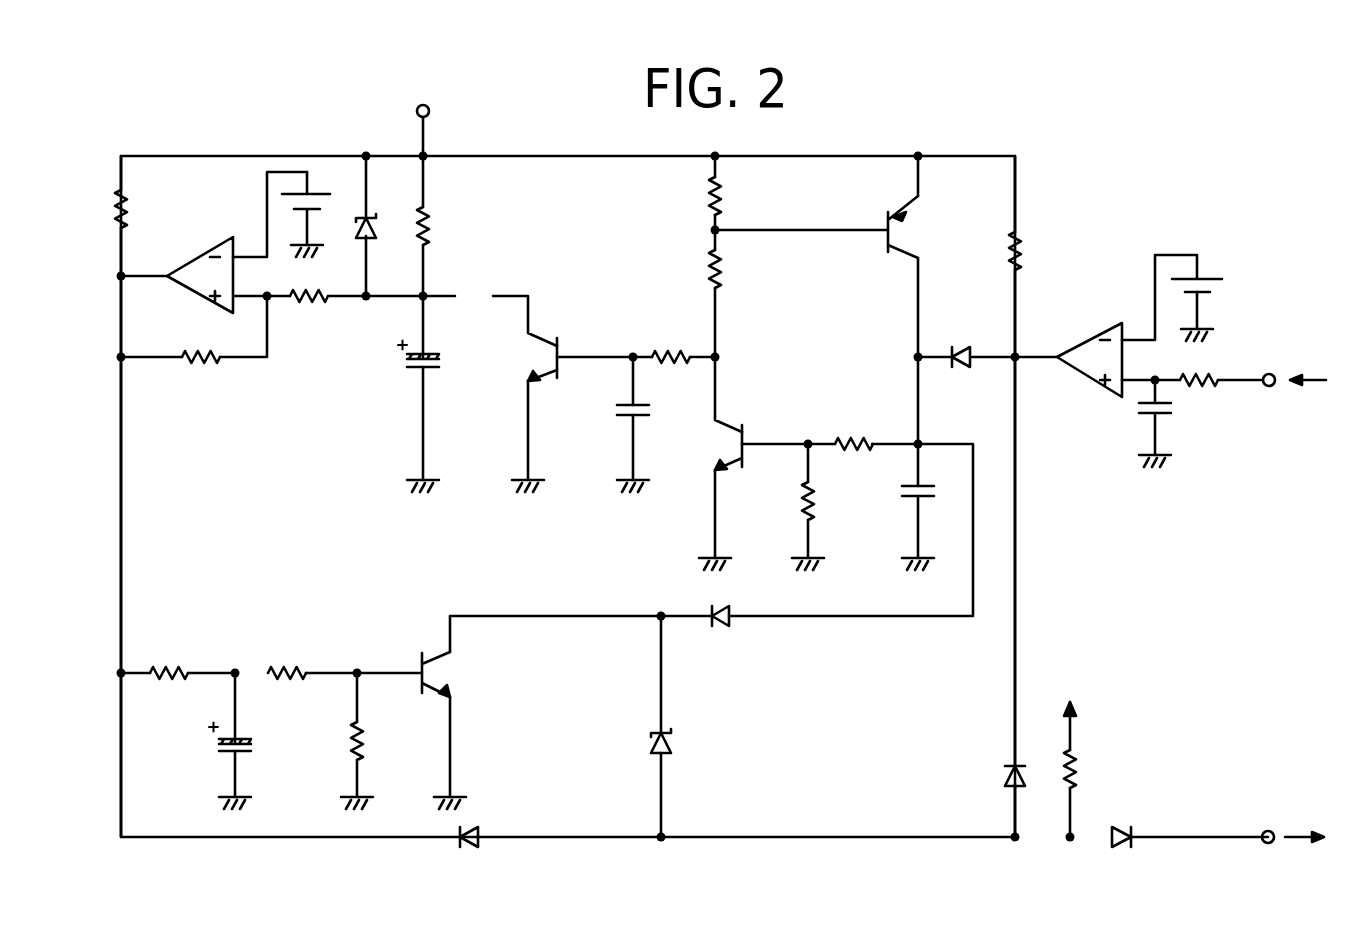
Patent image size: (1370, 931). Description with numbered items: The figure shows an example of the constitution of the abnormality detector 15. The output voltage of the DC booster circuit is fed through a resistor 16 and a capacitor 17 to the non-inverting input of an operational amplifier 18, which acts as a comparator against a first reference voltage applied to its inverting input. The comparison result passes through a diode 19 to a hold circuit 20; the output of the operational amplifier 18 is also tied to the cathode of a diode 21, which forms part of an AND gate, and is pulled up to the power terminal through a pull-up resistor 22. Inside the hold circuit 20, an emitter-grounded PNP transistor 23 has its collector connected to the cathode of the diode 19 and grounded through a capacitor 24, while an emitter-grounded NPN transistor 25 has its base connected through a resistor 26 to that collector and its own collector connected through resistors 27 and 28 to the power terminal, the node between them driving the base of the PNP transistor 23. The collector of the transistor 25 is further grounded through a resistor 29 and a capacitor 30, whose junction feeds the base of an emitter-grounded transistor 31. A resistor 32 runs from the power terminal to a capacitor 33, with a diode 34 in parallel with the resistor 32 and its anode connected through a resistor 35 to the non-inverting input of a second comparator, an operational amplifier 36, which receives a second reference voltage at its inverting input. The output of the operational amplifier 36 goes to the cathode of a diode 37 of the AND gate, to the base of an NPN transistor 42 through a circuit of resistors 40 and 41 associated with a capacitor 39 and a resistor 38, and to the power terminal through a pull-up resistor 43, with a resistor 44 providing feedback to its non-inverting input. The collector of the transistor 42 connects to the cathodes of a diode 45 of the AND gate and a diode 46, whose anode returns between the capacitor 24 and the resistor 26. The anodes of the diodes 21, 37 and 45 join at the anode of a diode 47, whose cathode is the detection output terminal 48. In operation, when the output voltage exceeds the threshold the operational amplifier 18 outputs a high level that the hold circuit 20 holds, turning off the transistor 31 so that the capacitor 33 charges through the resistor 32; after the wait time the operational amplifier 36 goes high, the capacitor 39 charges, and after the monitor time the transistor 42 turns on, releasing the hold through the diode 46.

The abnormality detector 15 is at (708, 463).
The resistor 16 is at (1216, 378).
The capacitor 17 is at (1166, 414).
The operational amplifier 18 is at (1098, 387).
The diode 19 is at (960, 347).
The hold circuit 20 is at (920, 200).
The diode 21 is at (1003, 776).
The pull-up resistor 22 is at (1025, 243).
The PNP transistor 23 is at (882, 248).
The capacitor 24 is at (906, 498).
The NPN transistor 25 is at (745, 428).
The resistor 26 is at (858, 440).
The resistor 27 is at (704, 272).
The resistor 28 is at (704, 207).
The resistor 29 is at (670, 354).
The capacitor 30 is at (622, 414).
The transistor 31 is at (560, 342).
The resistor 32 is at (430, 228).
The capacitor 33 is at (407, 372).
The diode 34 is at (371, 222).
The resistor 35 is at (312, 304).
The operational amplifier 36 is at (207, 252).
The diode 37 is at (480, 830).
The resistor 38 is at (178, 670).
The capacitor 39 is at (244, 742).
The resistor 40 is at (290, 670).
The resistor 41 is at (352, 746).
The NPN transistor 42 is at (418, 663).
The pull-up resistor 43 is at (113, 221).
The resistor 44 is at (205, 365).
The diode 45 is at (650, 744).
The diode 46 is at (722, 632).
The diode 47 is at (1122, 830).
The detection output terminal 48 is at (1265, 830).